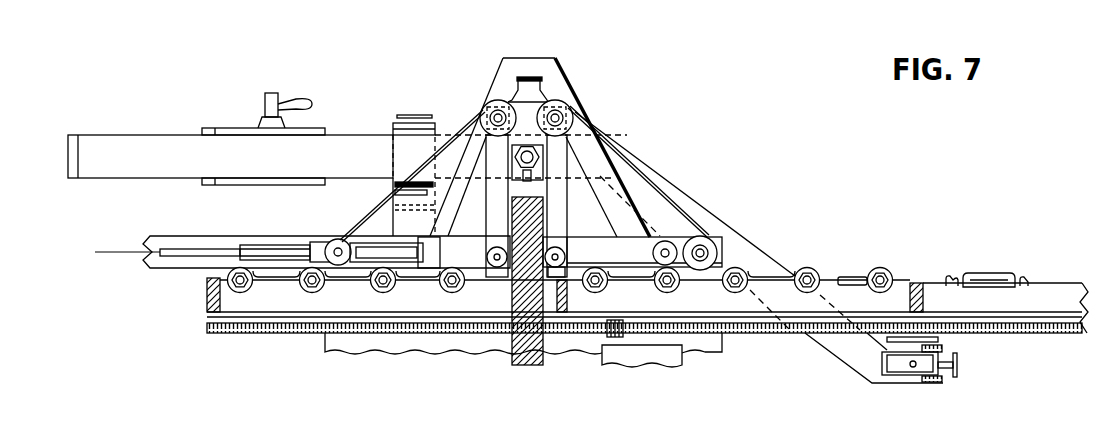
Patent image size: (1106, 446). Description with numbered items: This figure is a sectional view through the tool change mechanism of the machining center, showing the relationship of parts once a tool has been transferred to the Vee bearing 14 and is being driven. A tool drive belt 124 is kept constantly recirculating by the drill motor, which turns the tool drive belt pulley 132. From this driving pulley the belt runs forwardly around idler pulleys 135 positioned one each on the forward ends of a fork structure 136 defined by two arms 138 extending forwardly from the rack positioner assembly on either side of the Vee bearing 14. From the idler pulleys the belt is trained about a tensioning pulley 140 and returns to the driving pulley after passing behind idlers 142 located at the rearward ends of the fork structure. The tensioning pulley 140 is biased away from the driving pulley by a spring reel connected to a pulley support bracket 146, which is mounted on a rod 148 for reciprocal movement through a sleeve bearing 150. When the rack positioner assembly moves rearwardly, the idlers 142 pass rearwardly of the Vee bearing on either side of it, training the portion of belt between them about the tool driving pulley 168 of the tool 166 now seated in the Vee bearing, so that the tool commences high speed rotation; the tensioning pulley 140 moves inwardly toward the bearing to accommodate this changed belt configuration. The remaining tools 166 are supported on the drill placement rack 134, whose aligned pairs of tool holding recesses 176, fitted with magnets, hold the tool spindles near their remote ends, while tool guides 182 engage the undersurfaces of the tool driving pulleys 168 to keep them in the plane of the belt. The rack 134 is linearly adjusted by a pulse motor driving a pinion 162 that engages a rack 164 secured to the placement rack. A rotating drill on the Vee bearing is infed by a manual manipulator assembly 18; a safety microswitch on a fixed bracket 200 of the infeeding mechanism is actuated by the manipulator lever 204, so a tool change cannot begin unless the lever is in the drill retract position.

The Vee bearing 14 is at (520, 347).
The manual manipulator assembly 18 is at (348, 112).
The tool drive belt 124 is at (667, 188).
The tool drive belt pulley 132 is at (708, 241).
The drill placement rack 134 is at (1045, 296).
The idler pulleys 135 is at (492, 102).
The fork structure 136 is at (573, 196).
The arms 138 is at (493, 204).
The tensioning pulley 140 is at (336, 240).
The idlers 142 is at (486, 256).
The pulley support bracket 146 is at (355, 228).
The rod 148 is at (215, 244).
The sleeve bearing 150 is at (273, 244).
The pinion 162 is at (620, 320).
The rack 164 is at (772, 335).
The tool 166 is at (811, 270).
The tool driving pulley 168 is at (533, 153).
The tool holding recesses 176 is at (955, 279).
The tool guides 182 is at (852, 276).
The fixed bracket 200 is at (396, 126).
The lever 204 is at (314, 165).